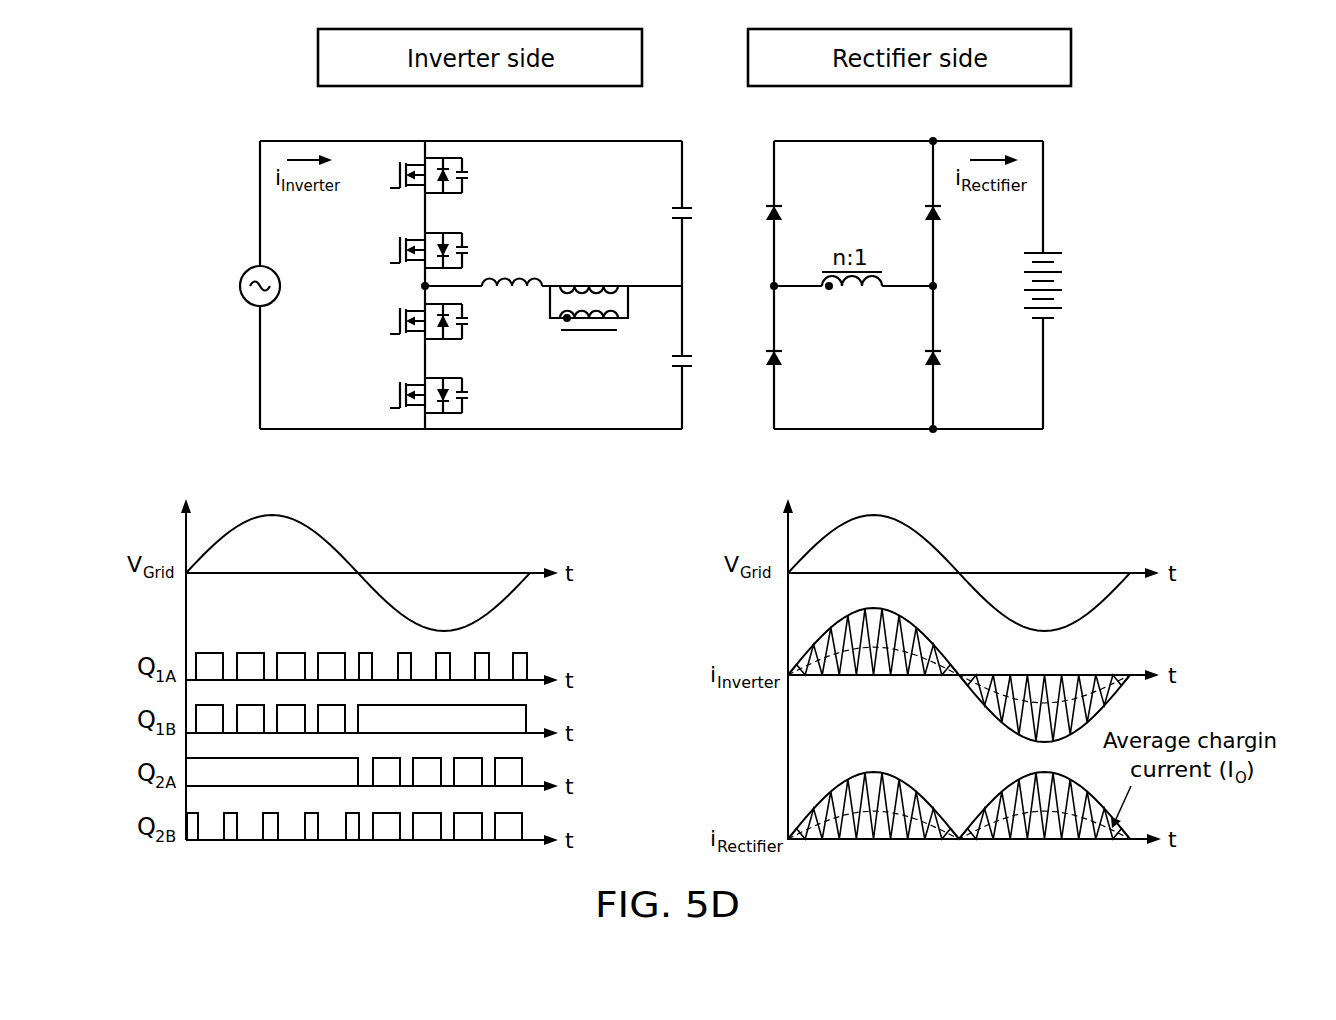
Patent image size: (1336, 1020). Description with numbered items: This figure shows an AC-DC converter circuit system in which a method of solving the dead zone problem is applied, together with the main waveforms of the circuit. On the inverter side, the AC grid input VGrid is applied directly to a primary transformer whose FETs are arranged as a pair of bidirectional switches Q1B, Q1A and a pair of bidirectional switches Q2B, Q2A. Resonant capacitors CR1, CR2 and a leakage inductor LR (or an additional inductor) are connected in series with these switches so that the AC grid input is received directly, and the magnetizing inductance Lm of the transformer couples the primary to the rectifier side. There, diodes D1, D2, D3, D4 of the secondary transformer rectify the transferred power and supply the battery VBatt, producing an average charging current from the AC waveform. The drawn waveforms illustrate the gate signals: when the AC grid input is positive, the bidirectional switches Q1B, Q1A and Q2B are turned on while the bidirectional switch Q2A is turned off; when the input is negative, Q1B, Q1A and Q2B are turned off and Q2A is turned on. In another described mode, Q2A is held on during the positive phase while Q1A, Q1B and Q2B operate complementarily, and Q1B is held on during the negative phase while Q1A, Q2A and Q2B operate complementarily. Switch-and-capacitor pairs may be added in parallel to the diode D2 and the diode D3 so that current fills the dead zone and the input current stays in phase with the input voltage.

The bidirectional switch Q1A is at (406, 176).
The bidirectional switch Q1B is at (406, 250).
The bidirectional switch Q2A is at (406, 322).
The bidirectional switch Q2B is at (406, 396).
The rectifier diode D1 is at (757, 216).
The diode D2 is at (757, 361).
The diode D3 is at (918, 361).
The rectifier diode D4 is at (918, 216).
The resonant capacitor CR1 is at (660, 216).
The resonant capacitor CR2 is at (660, 364).
The leakage inductor LR is at (512, 266).
The magnetizing inductance / transformer Lm is at (589, 294).
The grid voltage source VGrid is at (232, 286).
The battery VBatt is at (1073, 287).